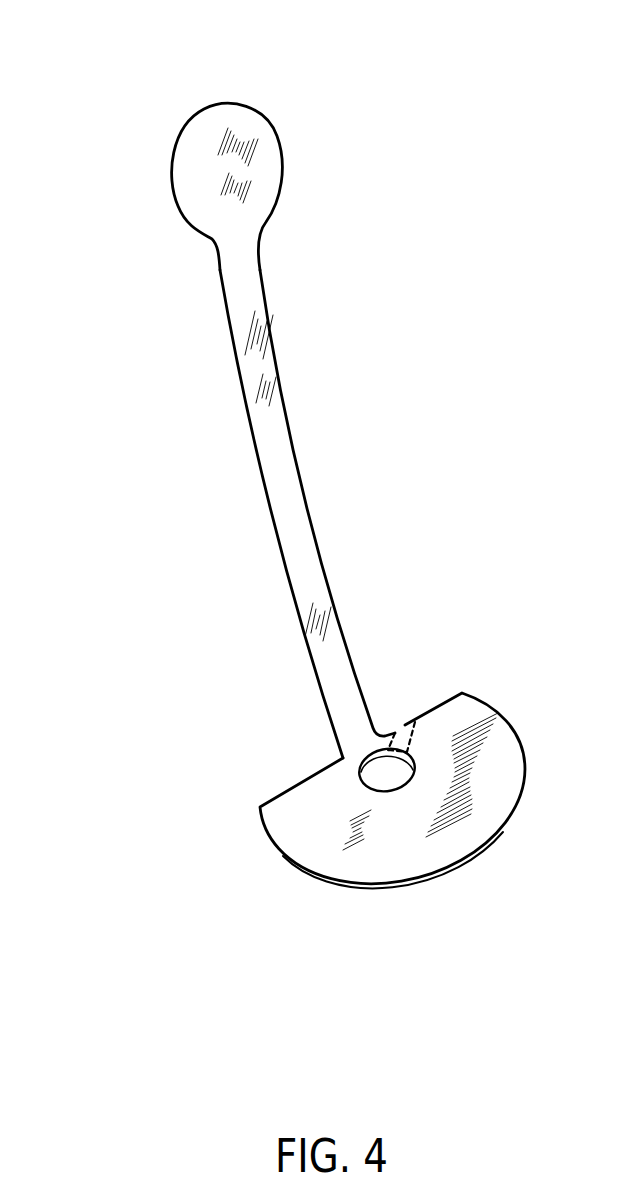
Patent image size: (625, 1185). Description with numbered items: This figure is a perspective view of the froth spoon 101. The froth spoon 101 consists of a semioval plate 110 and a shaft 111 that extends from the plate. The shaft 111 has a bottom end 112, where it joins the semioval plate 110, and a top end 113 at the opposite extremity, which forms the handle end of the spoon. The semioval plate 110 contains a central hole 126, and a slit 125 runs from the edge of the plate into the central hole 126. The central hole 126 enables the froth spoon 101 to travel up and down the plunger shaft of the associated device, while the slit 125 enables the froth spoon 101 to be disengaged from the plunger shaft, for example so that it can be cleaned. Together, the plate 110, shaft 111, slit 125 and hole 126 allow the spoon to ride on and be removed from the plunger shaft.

The froth spoon 101 is at (123, 70).
The semioval plate 110 is at (310, 797).
The shaft 111 is at (280, 367).
The bottom end 112 is at (343, 886).
The top end 113 is at (268, 146).
The slit 125 is at (403, 725).
The central hole 126 is at (398, 770).